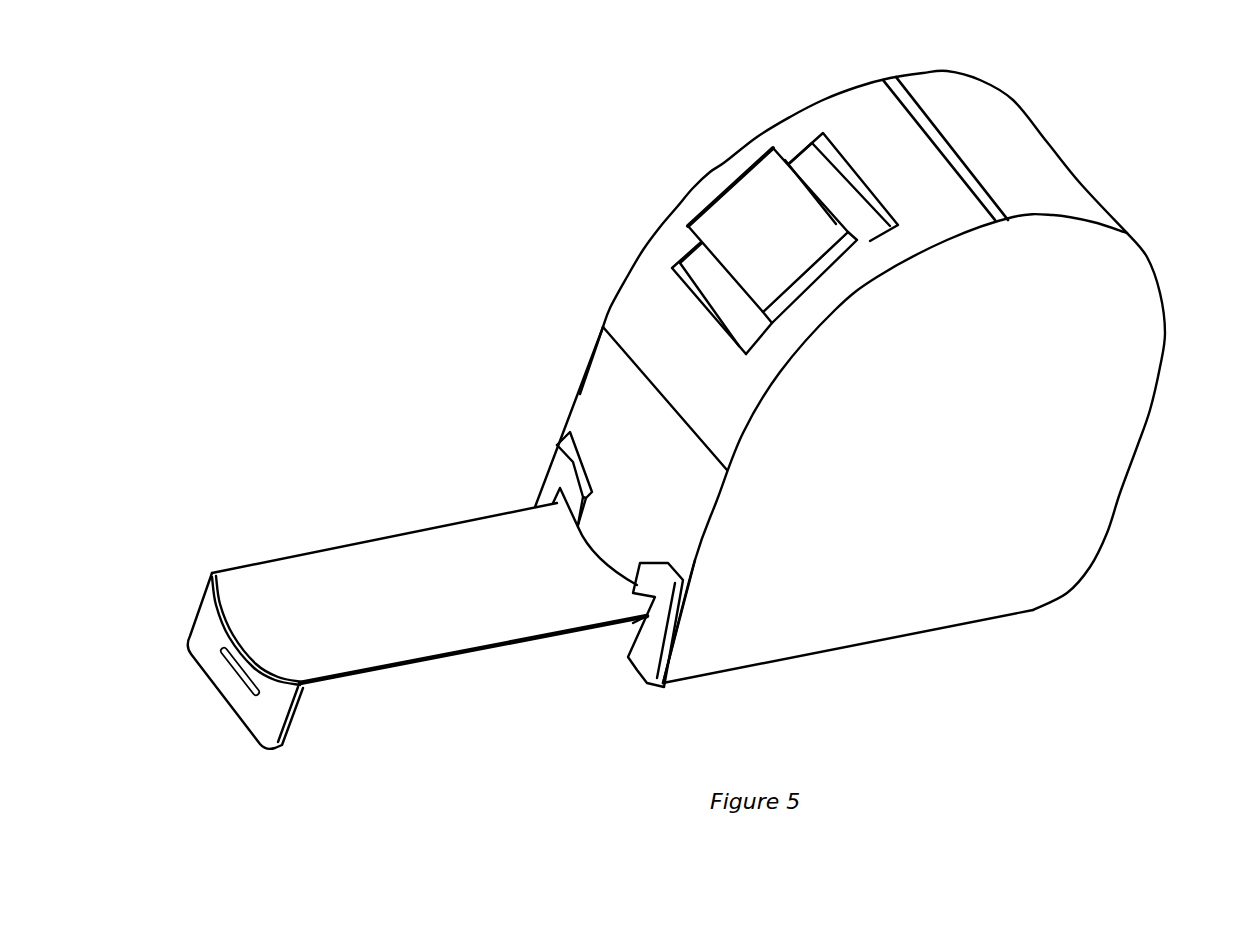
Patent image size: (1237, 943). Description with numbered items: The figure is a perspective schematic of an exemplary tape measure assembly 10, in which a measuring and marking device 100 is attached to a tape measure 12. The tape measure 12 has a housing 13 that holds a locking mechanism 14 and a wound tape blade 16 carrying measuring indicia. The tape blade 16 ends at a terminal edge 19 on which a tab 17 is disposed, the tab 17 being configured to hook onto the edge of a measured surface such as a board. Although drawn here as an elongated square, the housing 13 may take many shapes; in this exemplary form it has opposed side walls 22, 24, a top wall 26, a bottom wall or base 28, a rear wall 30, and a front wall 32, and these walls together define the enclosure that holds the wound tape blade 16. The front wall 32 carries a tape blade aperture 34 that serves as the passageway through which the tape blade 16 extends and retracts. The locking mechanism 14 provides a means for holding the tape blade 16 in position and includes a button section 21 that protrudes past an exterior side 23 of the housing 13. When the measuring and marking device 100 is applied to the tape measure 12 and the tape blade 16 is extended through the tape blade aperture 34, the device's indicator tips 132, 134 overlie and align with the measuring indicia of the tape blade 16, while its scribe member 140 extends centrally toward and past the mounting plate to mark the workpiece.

The tape measure assembly 10 is at (1074, 115).
The tape measure 12 is at (1046, 667).
The housing 13 is at (575, 262).
The locking mechanism 14 is at (710, 208).
The tape blade 16 is at (338, 600).
The tab 17 is at (203, 632).
The terminal edge 19 is at (298, 675).
The button section 21 is at (767, 220).
The side wall 22 is at (1047, 327).
The exterior side 23 is at (841, 114).
The side wall 24 is at (603, 315).
The top wall 26 is at (950, 205).
The bottom wall 28 is at (868, 649).
The rear wall 30 is at (1133, 453).
The front wall 32 is at (693, 530).
The tape blade aperture 34 is at (630, 657).
The measuring and marking device 100 is at (653, 695).
The tip 132 is at (575, 527).
The tip 134 is at (633, 623).
The scribe member 140 is at (578, 644).